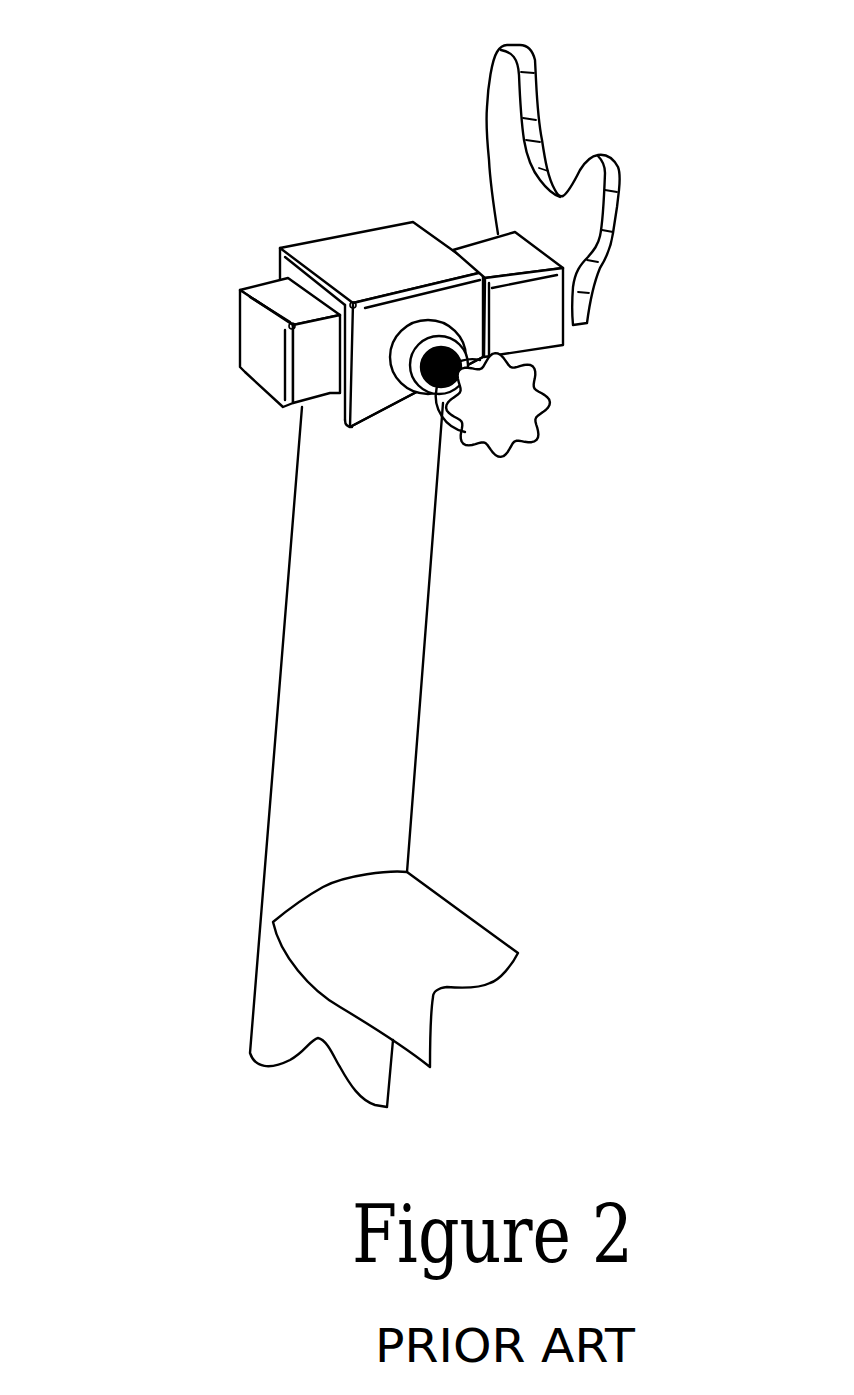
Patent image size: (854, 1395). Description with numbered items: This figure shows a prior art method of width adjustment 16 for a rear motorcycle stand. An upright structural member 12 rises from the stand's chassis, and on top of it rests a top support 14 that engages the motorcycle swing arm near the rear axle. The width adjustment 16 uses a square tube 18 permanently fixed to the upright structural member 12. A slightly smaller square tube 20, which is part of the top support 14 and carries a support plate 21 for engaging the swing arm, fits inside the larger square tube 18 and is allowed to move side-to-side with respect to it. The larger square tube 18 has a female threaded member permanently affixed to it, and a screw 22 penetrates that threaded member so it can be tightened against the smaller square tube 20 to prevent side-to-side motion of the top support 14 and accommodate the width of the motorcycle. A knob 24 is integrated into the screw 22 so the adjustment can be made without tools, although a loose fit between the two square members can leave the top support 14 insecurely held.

The upright structural member 12 is at (403, 720).
The top support 14 is at (504, 162).
The width adjustment 16 is at (396, 273).
The square tube 18 is at (328, 248).
The smaller square tube 20 is at (541, 328).
The support plate 21 is at (540, 152).
The screw 22 is at (440, 405).
The knob 24 is at (518, 428).